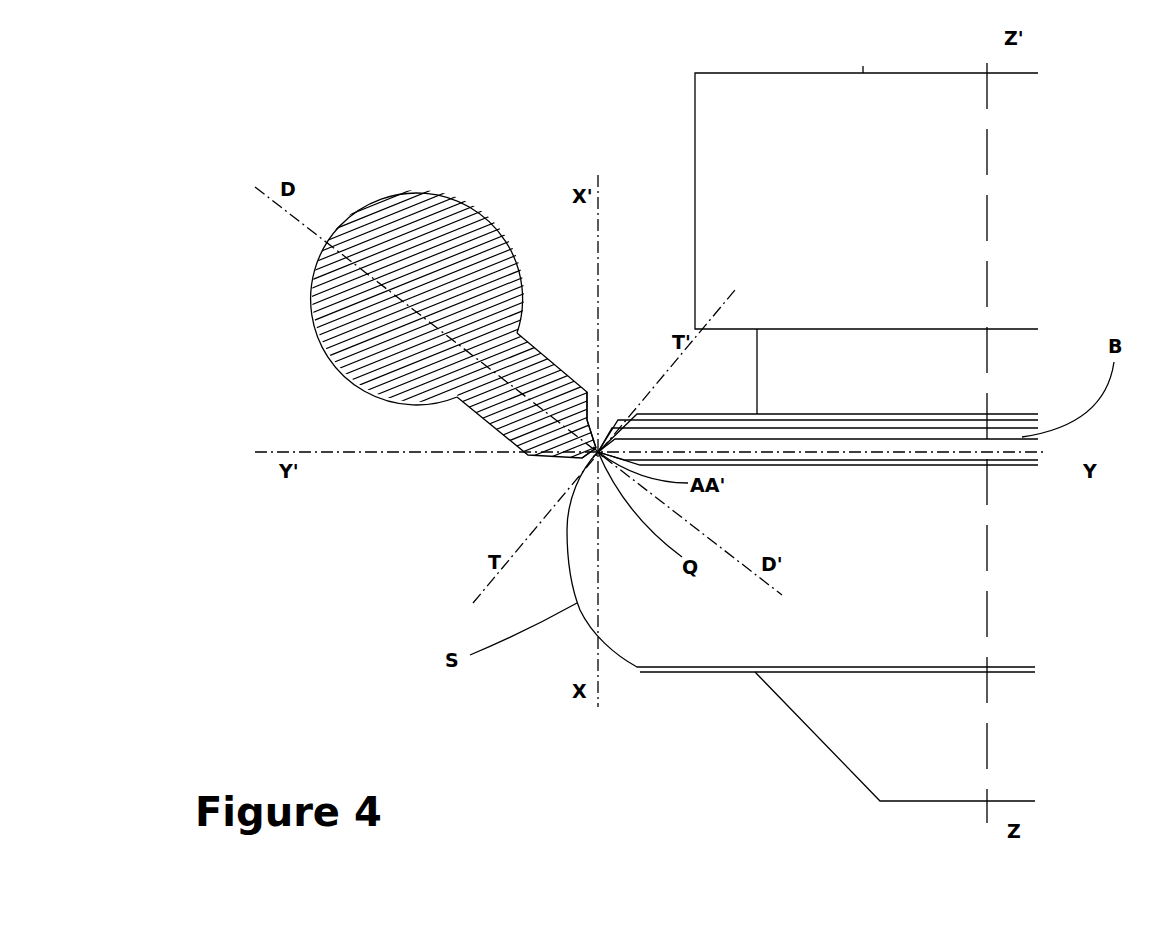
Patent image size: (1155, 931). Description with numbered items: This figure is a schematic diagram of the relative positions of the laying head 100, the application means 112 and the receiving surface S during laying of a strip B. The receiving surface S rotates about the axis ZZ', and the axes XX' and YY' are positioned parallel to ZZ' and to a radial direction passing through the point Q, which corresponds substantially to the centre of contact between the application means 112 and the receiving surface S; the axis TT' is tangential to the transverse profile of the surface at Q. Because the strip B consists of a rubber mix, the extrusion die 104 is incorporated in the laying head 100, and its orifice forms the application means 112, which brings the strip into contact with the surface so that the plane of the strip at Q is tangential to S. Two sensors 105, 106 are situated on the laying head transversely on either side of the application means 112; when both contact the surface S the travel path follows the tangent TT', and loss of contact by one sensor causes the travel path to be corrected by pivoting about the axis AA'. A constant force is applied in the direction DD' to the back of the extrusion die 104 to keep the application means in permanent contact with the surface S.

The laying head 100 is at (497, 428).
The extrusion die 104 is at (347, 313).
The sensor 105 is at (600, 445).
The sensor 106 is at (598, 452).
The application means 112 is at (590, 445).